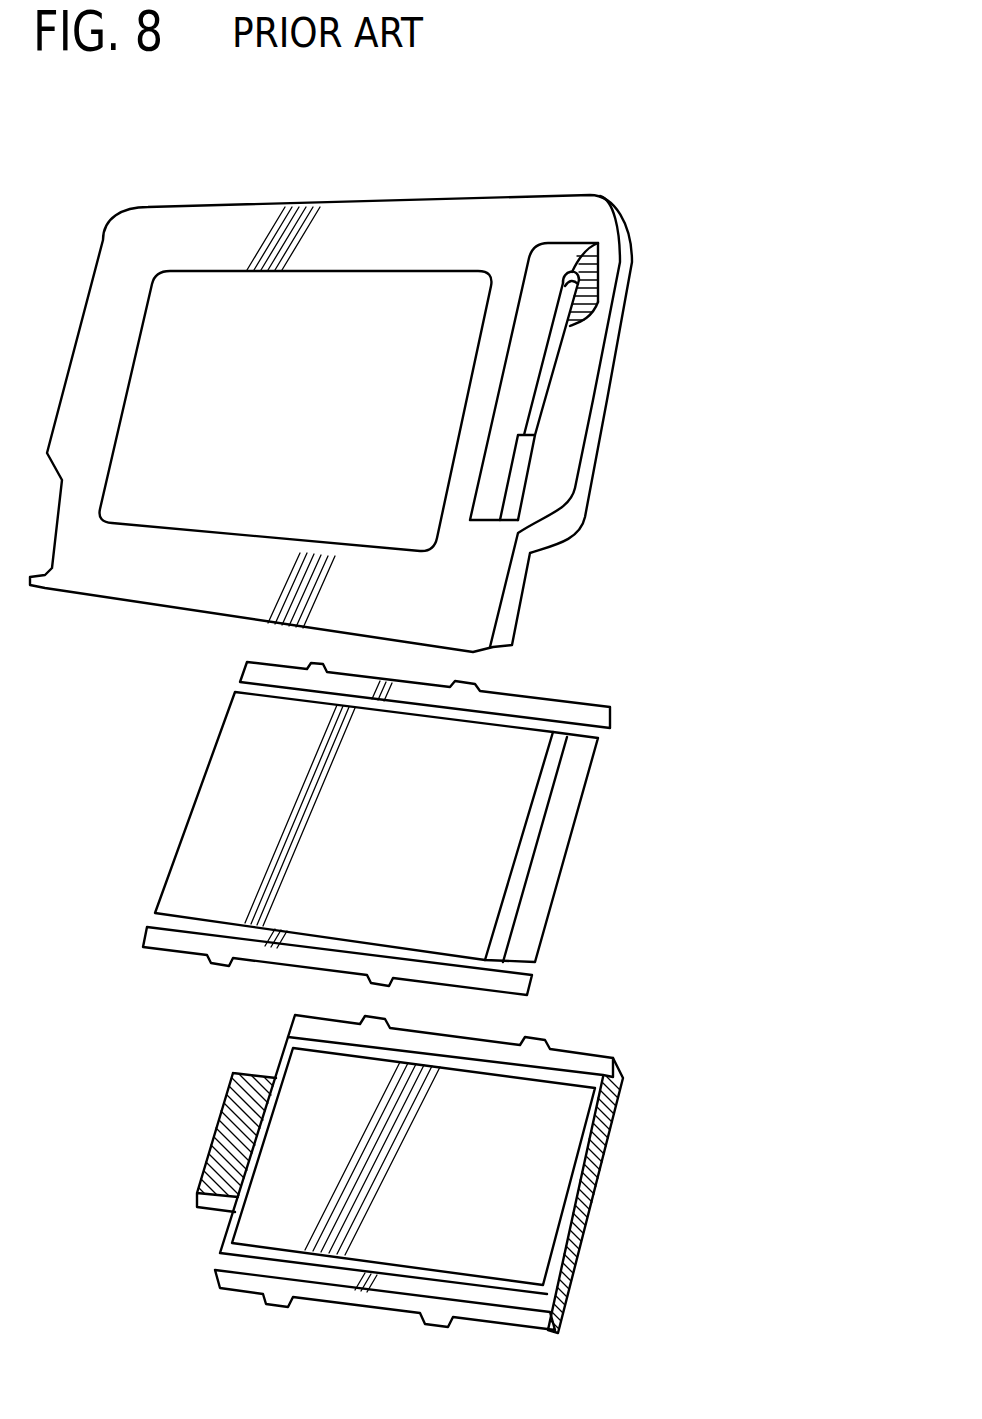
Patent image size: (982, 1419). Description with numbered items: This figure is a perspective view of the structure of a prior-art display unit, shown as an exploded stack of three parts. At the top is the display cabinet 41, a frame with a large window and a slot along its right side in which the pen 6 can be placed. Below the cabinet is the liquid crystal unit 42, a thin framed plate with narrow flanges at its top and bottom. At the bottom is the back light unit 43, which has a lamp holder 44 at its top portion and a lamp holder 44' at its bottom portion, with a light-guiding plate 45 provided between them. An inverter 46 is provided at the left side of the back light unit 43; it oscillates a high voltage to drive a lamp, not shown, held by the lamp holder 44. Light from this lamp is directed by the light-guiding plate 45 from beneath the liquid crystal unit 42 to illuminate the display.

The pen 6 is at (563, 317).
The display cabinet 41 is at (602, 430).
The liquid crystal unit 42 is at (590, 773).
The back light unit 43 is at (622, 1110).
The lamp holder 44 is at (500, 1045).
The lamp holder 44' is at (452, 1299).
The light-guiding plate 45 is at (507, 1195).
The inverter 46 is at (222, 1133).